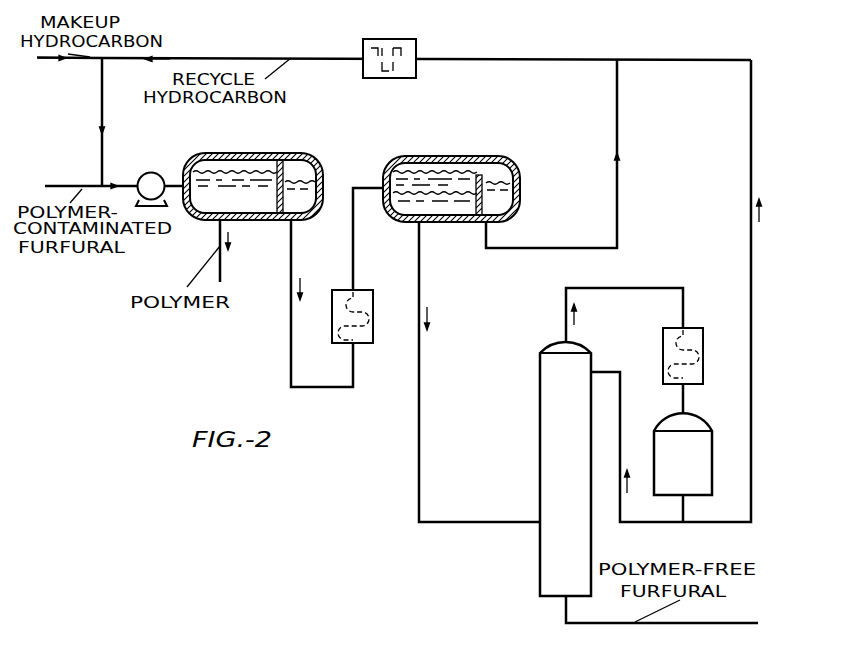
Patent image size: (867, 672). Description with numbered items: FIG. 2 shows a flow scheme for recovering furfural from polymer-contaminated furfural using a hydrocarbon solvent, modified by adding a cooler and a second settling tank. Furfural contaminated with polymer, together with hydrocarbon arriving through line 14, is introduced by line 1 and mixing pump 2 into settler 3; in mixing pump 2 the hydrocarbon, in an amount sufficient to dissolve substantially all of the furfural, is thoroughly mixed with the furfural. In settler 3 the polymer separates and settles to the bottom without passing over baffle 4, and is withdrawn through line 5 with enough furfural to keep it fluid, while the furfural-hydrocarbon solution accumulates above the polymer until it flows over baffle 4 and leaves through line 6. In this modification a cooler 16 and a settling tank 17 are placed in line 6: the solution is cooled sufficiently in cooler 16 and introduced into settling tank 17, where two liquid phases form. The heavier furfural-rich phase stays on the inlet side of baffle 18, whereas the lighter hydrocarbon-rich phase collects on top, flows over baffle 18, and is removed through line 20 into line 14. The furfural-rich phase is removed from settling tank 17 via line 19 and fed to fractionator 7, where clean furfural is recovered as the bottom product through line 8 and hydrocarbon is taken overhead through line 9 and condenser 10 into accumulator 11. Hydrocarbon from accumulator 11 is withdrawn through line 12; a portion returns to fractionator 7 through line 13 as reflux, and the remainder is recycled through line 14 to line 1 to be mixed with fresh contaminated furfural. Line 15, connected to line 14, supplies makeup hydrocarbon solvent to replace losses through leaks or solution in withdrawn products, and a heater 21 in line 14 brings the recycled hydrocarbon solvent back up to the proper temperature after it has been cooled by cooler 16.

The line 1 is at (63, 185).
The mixing pump 2 is at (143, 173).
The settler 3 is at (233, 155).
The baffle 4 is at (285, 175).
The line 5 is at (224, 268).
The line 6 is at (290, 360).
The fractionator 7 is at (539, 443).
The line 8 is at (563, 612).
The line 9 is at (566, 292).
The condenser 10 is at (668, 358).
The accumulator 11 is at (713, 435).
The line 12 is at (685, 513).
The line 13 is at (621, 433).
The line 14 is at (257, 58).
The line 15 is at (93, 58).
The cooler 16 is at (373, 320).
The settling tank 17 is at (517, 203).
The baffle 18 is at (482, 177).
The line 19 is at (417, 417).
The line 20 is at (617, 230).
The heater 21 is at (390, 74).